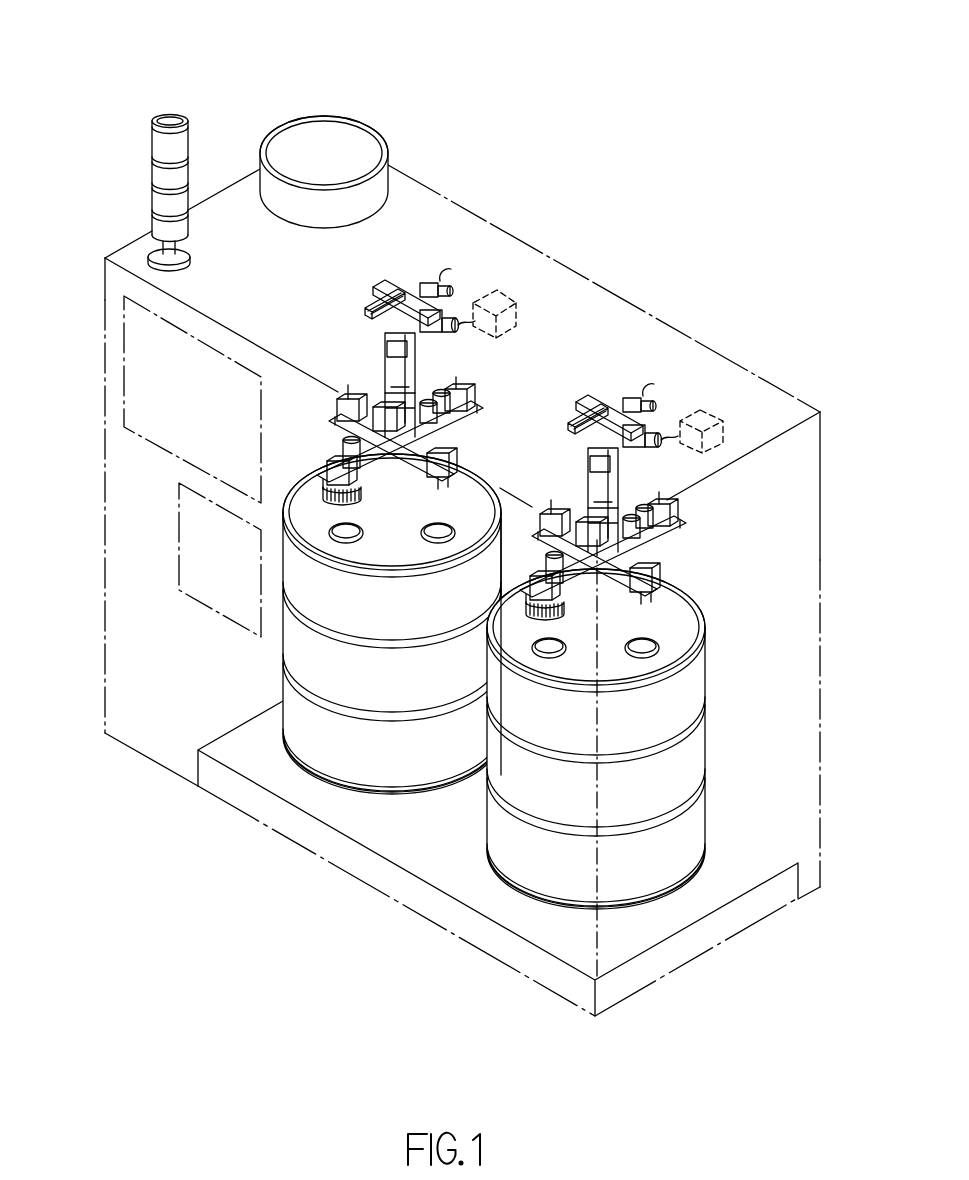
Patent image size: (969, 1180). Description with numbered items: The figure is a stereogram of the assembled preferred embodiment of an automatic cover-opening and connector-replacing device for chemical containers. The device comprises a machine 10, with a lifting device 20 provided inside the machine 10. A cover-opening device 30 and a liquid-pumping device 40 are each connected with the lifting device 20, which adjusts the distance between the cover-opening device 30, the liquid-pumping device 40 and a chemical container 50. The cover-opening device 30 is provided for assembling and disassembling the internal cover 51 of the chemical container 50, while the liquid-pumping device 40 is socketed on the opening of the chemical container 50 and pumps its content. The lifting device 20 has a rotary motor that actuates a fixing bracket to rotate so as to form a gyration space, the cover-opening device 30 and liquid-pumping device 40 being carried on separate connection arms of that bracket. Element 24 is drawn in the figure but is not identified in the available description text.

The machine 10 is at (269, 96).
The lifting device 20 is at (447, 399).
The sensor 24 is at (497, 302).
The cover-opening device 30 is at (318, 413).
The liquid-pumping device 40 is at (460, 386).
The chemical container 50 is at (380, 731).
The internal cover 51 is at (348, 535).